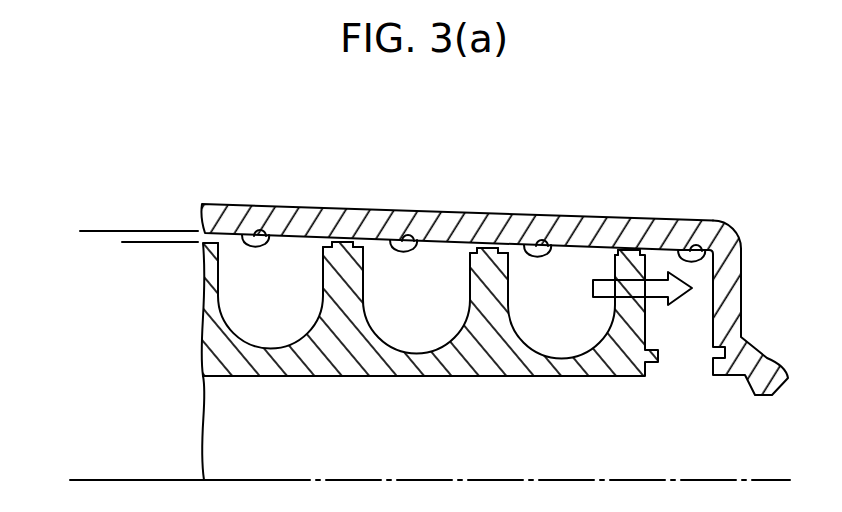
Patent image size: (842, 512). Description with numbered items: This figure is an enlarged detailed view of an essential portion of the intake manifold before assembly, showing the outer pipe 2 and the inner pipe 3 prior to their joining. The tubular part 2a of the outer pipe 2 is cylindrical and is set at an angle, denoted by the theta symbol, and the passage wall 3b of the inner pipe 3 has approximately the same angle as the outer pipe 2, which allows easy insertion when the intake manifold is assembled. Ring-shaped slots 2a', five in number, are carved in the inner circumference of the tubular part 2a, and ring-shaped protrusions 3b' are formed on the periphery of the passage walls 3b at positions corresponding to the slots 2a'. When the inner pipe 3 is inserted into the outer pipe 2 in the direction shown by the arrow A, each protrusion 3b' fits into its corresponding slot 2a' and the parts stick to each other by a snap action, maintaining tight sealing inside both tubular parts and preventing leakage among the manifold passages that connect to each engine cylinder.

The outer pipe 2 is at (672, 220).
The tubular part 2a is at (457, 175).
The ring-shaped slots 2a' is at (481, 191).
The inner pipe 3 is at (363, 347).
The passage wall 3b is at (423, 301).
The ring-shaped protrusions 3b' is at (478, 194).
The arrow A is at (696, 302).